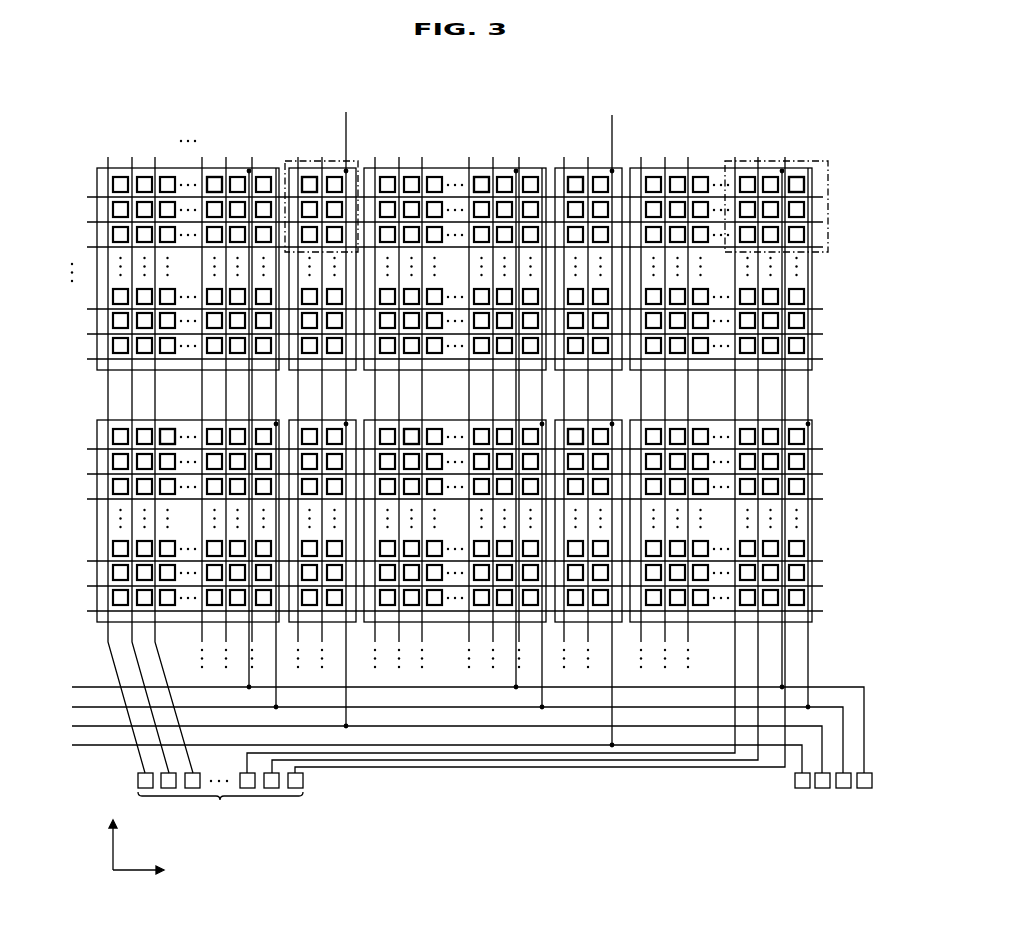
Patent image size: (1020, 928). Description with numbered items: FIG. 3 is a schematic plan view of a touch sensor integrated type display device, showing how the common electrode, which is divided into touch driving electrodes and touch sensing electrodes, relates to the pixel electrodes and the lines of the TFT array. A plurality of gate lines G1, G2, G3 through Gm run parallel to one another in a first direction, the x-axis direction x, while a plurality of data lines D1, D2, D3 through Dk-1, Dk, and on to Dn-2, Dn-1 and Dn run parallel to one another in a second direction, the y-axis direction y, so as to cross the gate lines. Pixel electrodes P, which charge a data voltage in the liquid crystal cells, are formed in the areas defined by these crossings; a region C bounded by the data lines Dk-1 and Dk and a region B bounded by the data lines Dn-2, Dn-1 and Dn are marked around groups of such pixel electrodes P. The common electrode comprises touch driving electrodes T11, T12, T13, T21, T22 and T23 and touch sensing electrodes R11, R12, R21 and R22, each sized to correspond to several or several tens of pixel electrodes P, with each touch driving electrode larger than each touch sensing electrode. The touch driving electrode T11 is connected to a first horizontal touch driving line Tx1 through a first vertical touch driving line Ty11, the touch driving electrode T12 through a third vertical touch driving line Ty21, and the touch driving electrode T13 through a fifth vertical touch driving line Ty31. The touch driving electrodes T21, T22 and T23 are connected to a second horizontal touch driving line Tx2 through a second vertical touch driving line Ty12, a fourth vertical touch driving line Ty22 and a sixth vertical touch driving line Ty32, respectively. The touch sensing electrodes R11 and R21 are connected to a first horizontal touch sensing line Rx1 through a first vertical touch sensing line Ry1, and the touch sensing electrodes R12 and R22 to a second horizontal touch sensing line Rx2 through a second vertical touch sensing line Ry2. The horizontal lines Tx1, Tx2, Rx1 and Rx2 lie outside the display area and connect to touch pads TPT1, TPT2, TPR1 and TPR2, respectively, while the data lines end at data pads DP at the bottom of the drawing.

The data line D1 is at (127, 459).
The data line D2 is at (150, 459).
The data line D3 is at (174, 459).
The data line Dk-1 is at (297, 390).
The data line Dk is at (326, 390).
The data line Dn-2 is at (493, 463).
The data line Dn-1 is at (518, 453).
The data line Dn is at (540, 463).
The gate line G1 is at (442, 197).
The gate line G2 is at (442, 222).
The gate line G3 is at (442, 247).
The gate line Gm is at (442, 611).
The pixel electrode P is at (214, 176).
The touch driving electrode T11 is at (262, 167).
The touch driving electrode T12 is at (440, 167).
The touch driving electrode T13 is at (698, 167).
The touch driving electrode T21 is at (118, 421).
The touch driving electrode T22 is at (446, 419).
The touch driving electrode T23 is at (800, 421).
The touch sensing electrode R11 is at (357, 176).
The touch sensing electrode R12 is at (623, 176).
The touch sensing electrode R21 is at (334, 628).
The touch sensing electrode R22 is at (600, 628).
The sensing electrode unit region C is at (337, 160).
The pixel block region B is at (818, 160).
The first vertical touch sensing line Ry1 is at (345, 411).
The second vertical touch sensing line Ry2 is at (612, 420).
The first vertical touch driving line Ty11 is at (247, 673).
The second vertical touch driving line Ty12 is at (278, 677).
The third vertical touch driving line Ty21 is at (514, 675).
The fourth vertical touch driving line Ty22 is at (544, 677).
The fifth vertical touch driving line Ty31 is at (785, 647).
The sixth vertical touch driving line Ty32 is at (811, 669).
The first horizontal touch driving line Tx1 is at (450, 725).
The second horizontal touch driving line Tx2 is at (440, 735).
The first horizontal touch sensing line Rx1 is at (430, 745).
The second horizontal touch sensing line Rx2 is at (420, 754).
The data pads DP is at (220, 802).
The touch pad TPR1 is at (822, 790).
The touch pad TPR2 is at (802, 790).
The touch pad TPT1 is at (864, 790).
The touch pad TPT2 is at (843, 790).
The x-axis direction x is at (146, 870).
The y-axis direction y is at (106, 844).